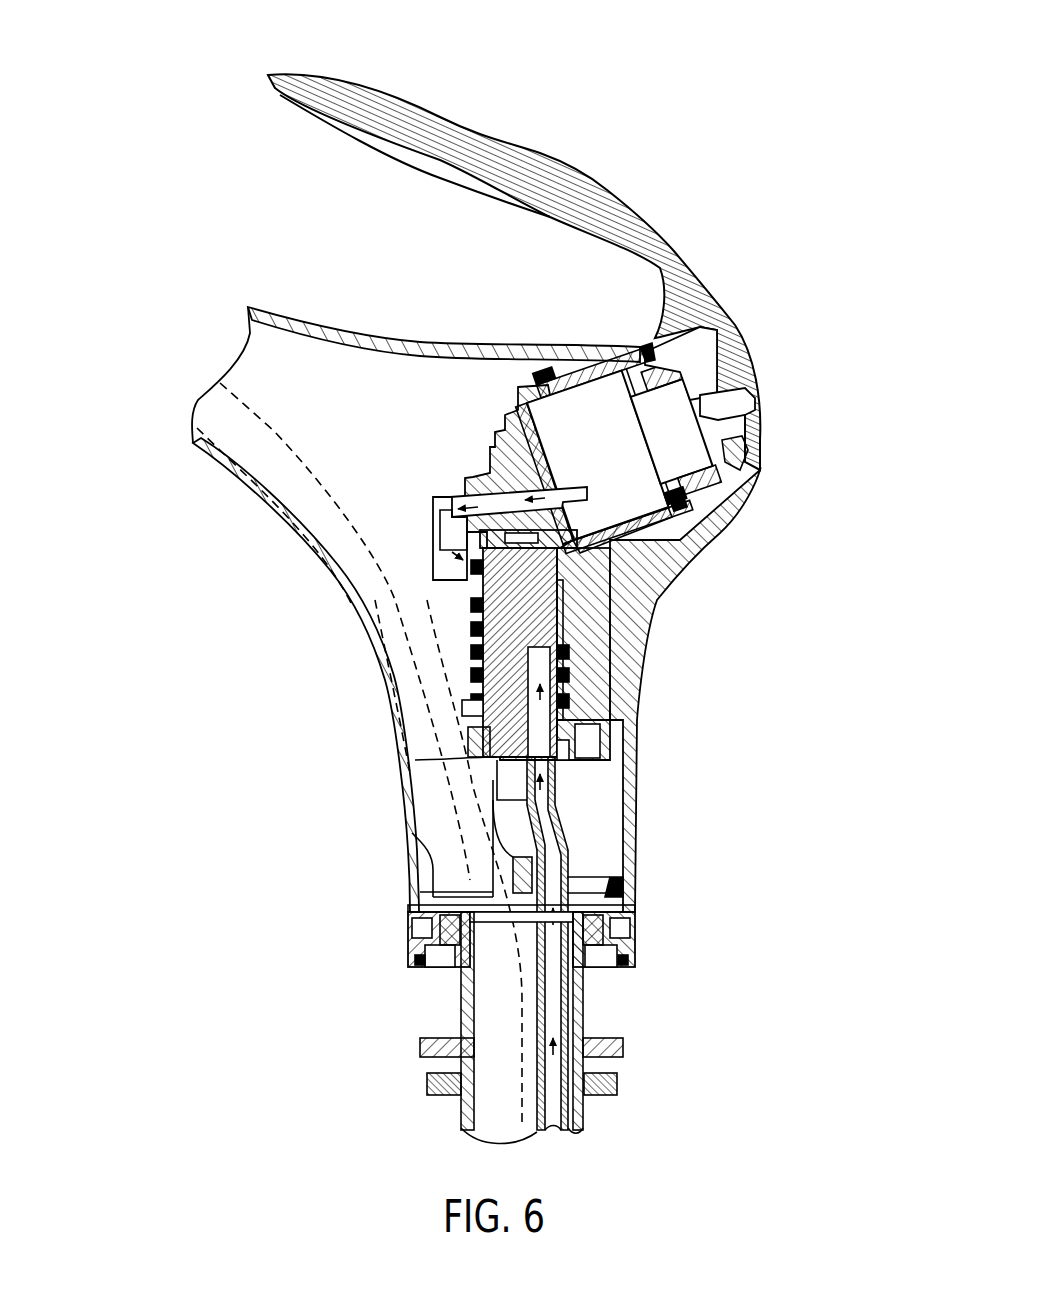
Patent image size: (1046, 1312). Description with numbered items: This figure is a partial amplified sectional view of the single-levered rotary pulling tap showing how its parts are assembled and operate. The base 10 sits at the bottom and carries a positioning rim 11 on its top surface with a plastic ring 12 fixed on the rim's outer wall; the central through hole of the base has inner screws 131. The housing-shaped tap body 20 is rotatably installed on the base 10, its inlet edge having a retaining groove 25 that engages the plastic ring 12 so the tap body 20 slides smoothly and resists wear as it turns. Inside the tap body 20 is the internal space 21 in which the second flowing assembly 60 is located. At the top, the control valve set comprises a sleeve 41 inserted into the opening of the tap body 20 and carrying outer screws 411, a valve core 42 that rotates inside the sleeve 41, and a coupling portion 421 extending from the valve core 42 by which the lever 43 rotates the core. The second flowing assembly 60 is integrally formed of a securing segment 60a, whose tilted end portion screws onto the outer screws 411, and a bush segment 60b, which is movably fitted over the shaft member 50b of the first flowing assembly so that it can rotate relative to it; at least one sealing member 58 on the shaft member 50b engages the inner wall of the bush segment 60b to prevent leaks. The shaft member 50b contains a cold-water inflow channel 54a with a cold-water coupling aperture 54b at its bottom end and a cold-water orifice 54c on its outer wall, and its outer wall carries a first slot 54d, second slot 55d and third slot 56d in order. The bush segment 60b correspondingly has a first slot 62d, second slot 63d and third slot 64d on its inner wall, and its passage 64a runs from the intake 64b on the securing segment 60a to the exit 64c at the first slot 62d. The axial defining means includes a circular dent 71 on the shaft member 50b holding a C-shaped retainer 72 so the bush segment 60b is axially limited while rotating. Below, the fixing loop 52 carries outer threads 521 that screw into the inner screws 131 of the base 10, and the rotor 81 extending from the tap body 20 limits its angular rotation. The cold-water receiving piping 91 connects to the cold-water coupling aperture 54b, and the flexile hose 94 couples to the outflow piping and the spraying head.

The base 10 is at (405, 950).
The positioning rim 11 is at (412, 840).
The plastic ring 12 is at (412, 895).
The inner screws 131 is at (430, 960).
The tap body 20 is at (322, 322).
The internal space 21 is at (370, 378).
The retaining groove 25 is at (408, 935).
The sleeve 41 is at (548, 415).
The outer screws 411 is at (545, 395).
The valve core 42 is at (660, 545).
The coupling portion 421 is at (745, 378).
The lever 43 is at (468, 127).
The shaft member 50b is at (560, 740).
The fixing loop 52 is at (590, 965).
The outer threads 521 is at (625, 948).
The cold-water inflow channel 54a is at (565, 765).
The cold-water coupling aperture 54b is at (560, 780).
The cold-water orifice 54c is at (565, 690).
The first slot 54d is at (575, 585).
The second slot 55d is at (478, 628).
The third slot 56d is at (465, 700).
The sealing member 58 is at (570, 615).
The second flowing assembly 60 is at (465, 440).
The securing segment 60a is at (432, 512).
The bush segment 60b is at (478, 652).
The first slot 62d is at (480, 578).
The second slot 63d is at (480, 598).
The passage 64a is at (490, 500).
The intake 64b is at (700, 512).
The exit 64c is at (455, 560).
The third slot 64d is at (475, 660).
The circular dent 71 is at (460, 712).
The C-shaped retainer 72 is at (460, 725).
The rotor 81 is at (625, 895).
The cold-water receiving piping 91 is at (625, 860).
The flexile hose 94 is at (415, 760).